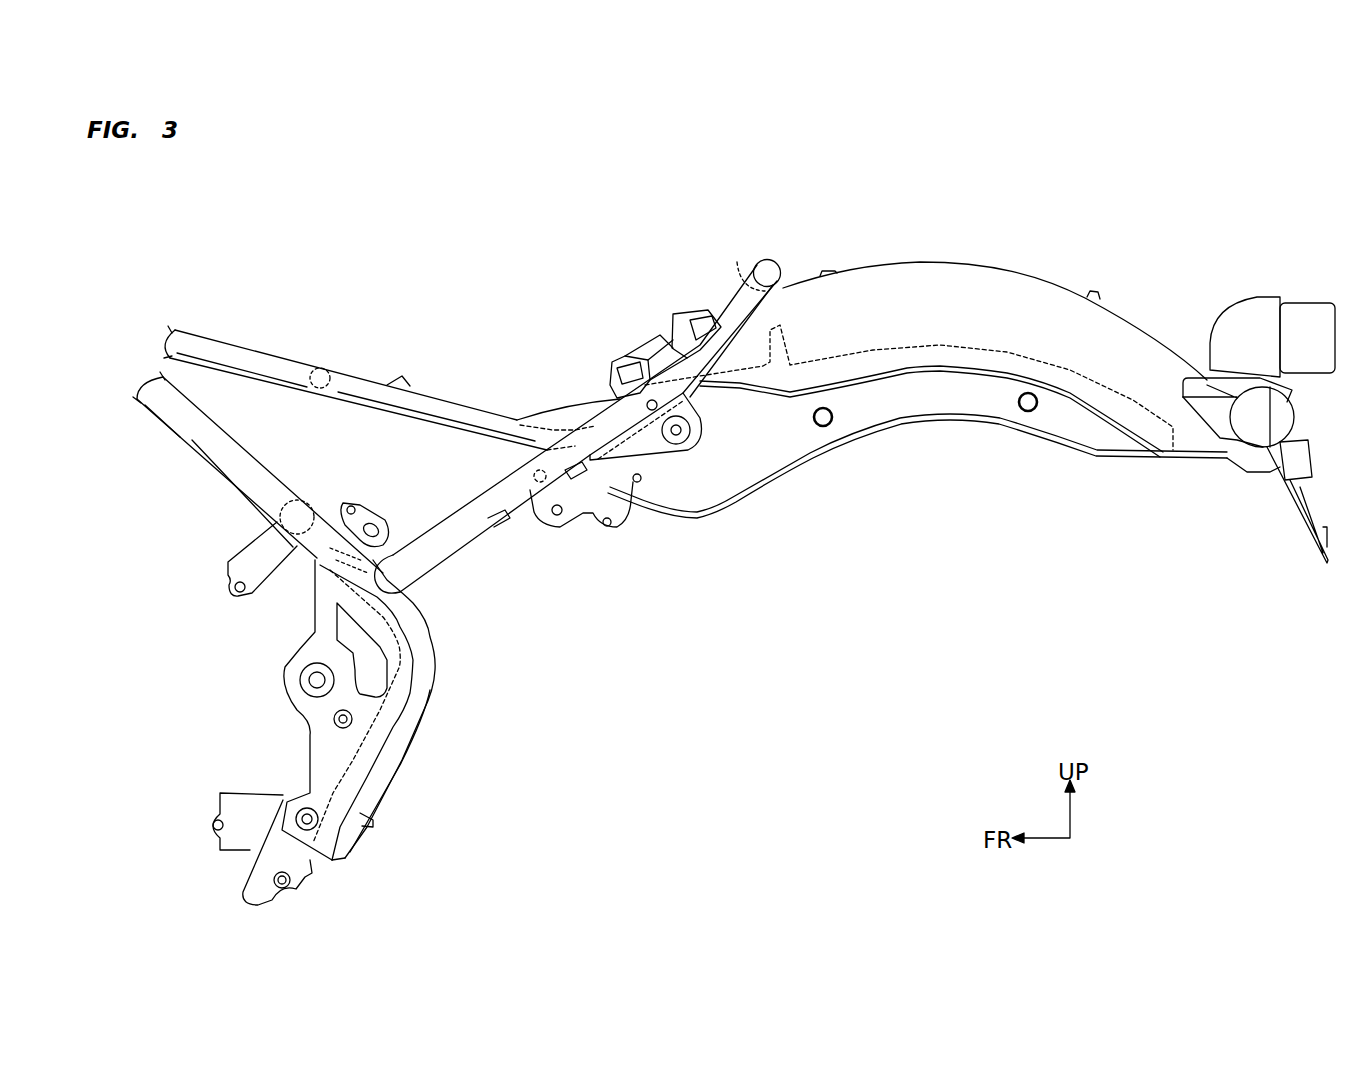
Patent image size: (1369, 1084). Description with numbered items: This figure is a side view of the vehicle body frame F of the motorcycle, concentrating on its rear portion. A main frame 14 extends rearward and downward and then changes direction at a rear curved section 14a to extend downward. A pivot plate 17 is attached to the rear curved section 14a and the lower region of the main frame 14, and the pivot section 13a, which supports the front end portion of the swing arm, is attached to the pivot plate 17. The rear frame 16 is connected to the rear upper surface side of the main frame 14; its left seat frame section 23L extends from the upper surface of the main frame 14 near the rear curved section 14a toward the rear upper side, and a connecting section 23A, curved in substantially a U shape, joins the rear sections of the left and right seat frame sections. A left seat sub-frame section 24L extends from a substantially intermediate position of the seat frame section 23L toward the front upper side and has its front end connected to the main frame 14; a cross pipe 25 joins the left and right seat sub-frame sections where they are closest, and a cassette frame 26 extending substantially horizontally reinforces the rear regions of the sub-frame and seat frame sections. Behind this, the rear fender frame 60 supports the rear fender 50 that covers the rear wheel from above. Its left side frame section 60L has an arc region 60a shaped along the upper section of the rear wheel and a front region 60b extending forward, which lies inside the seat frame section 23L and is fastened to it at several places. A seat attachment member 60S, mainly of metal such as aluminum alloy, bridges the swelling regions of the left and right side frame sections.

The left seat sub-frame section 24L is at (227, 353).
The vehicle body frame F is at (267, 328).
The cross pipe 25 is at (309, 365).
The main frame 14 is at (218, 453).
The rear curved section 14a is at (428, 688).
The pivot section 13a is at (303, 685).
The pivot plate 17 is at (337, 760).
The cassette frame 26 is at (550, 412).
The left seat frame section 23L is at (592, 433).
The connecting section 23A is at (750, 292).
The rear frame 16 is at (780, 248).
The seat attachment member 60S is at (652, 322).
The rear fender 50 is at (995, 283).
The rear fender frame 60 is at (1052, 383).
The arc region 60a is at (897, 407).
The left side frame section 60L is at (985, 403).
The front region 60b is at (615, 480).